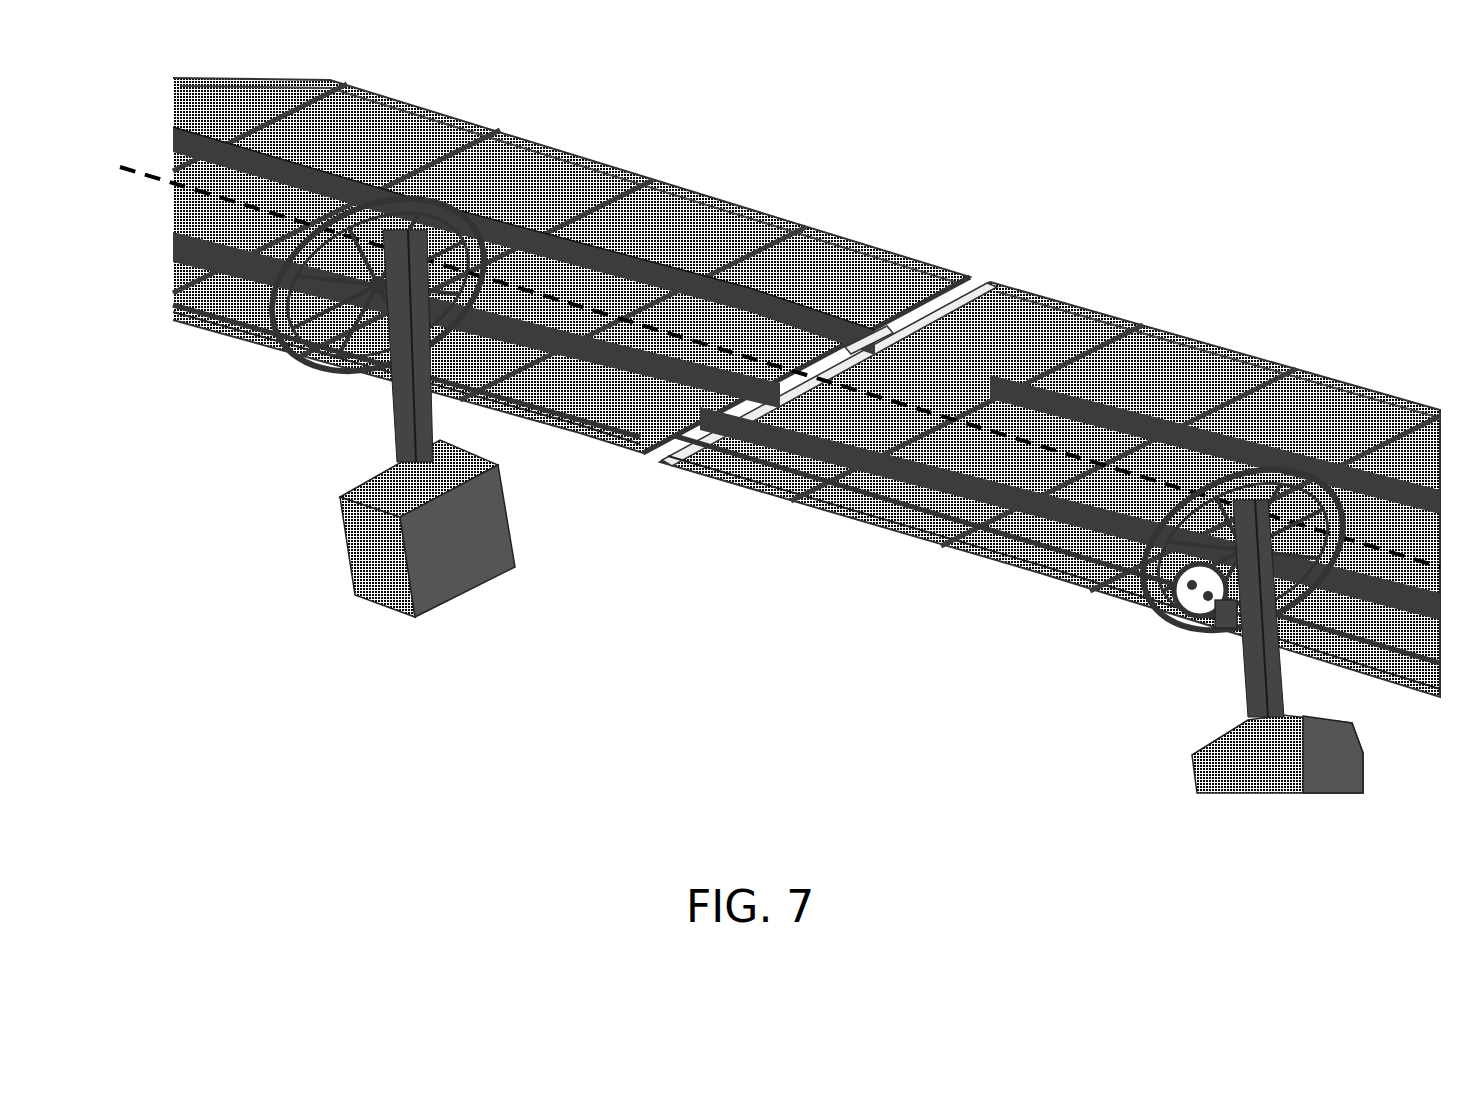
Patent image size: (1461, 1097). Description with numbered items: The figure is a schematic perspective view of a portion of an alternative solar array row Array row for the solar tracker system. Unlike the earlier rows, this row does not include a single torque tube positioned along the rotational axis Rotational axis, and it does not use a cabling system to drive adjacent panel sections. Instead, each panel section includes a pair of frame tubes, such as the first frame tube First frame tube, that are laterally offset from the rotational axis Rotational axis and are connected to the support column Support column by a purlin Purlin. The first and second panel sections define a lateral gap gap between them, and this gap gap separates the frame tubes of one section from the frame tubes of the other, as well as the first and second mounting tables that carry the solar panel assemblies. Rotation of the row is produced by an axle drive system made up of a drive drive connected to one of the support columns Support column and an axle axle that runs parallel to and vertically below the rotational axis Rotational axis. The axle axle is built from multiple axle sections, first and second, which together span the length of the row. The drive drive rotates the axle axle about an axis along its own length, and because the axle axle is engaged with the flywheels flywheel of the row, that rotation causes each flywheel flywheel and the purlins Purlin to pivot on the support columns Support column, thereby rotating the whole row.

The rotational axis Rotational axis is at (143, 165).
The purlin Purlin is at (437, 132).
The first frame tube First frame tube is at (647, 175).
The solar array row Array row is at (1130, 78).
The lateral gap is at (883, 330).
The element flywheel is at (353, 377).
The support column Support column is at (397, 423).
The element axle is at (780, 497).
The element drive is at (1190, 632).